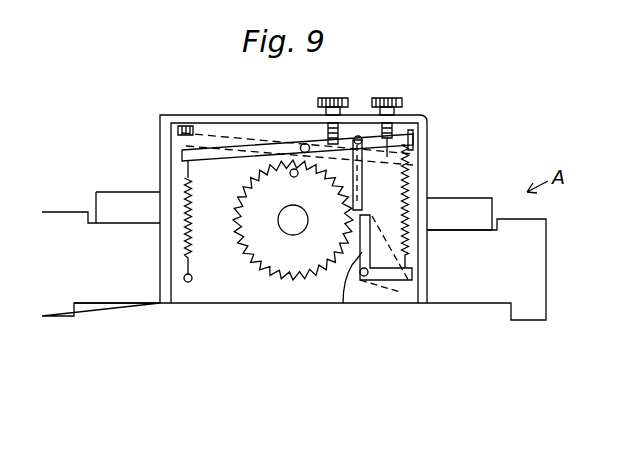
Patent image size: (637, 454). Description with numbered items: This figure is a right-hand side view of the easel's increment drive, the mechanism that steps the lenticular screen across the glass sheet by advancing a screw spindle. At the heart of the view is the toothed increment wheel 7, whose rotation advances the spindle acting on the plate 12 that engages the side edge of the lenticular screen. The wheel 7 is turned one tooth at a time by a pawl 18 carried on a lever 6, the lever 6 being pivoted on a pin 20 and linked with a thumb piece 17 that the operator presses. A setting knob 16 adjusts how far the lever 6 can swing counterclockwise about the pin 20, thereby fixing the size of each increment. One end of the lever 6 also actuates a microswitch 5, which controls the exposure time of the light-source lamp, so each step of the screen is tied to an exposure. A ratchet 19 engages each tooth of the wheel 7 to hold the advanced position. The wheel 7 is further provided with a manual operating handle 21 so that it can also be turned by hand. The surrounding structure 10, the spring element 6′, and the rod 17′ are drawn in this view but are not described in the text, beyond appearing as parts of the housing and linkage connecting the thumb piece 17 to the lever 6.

The microswitch 5 is at (185, 126).
The lever 6 is at (256, 146).
The spring 6′ is at (192, 163).
The increment wheel 7 is at (266, 272).
The base 10 is at (108, 290).
The plate 12 is at (452, 198).
The setting knob 16 is at (342, 98).
The thumb piece 17 is at (394, 98).
The rod 17′ is at (387, 140).
The pawl 18 is at (358, 172).
The ratchet 19 is at (343, 303).
The pin 20 is at (305, 143).
The manual operating handle 21 is at (290, 176).